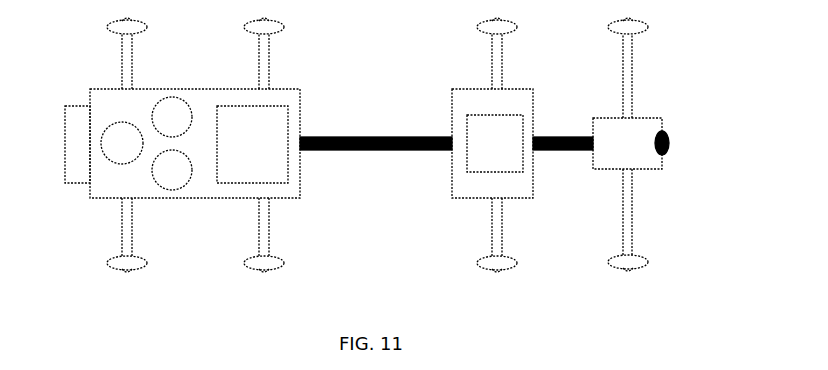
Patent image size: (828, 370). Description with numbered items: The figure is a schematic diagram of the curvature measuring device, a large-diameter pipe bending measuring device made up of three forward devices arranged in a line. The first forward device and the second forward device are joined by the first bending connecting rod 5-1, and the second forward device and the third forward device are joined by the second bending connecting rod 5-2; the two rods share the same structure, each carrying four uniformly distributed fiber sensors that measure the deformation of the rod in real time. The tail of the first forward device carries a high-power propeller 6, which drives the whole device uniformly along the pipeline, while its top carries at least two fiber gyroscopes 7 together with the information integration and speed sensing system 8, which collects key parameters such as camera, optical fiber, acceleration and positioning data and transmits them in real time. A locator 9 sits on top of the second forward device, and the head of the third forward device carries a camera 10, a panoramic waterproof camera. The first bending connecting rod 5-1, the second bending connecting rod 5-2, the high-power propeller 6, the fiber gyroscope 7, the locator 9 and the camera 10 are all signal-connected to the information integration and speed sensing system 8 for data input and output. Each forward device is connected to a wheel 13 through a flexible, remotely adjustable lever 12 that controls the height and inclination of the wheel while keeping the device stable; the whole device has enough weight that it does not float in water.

The high-power propeller 6 is at (82, 175).
The fiber gyroscope 7 is at (173, 175).
The information integration and speed sensing system 8 is at (273, 175).
The locator 9 is at (502, 150).
The camera 10 is at (664, 156).
The support rod 12 is at (267, 67).
The wheel 13 is at (245, 30).
The first bending connecting rod 5-1 is at (372, 152).
The second bending connecting rod 5-2 is at (553, 150).